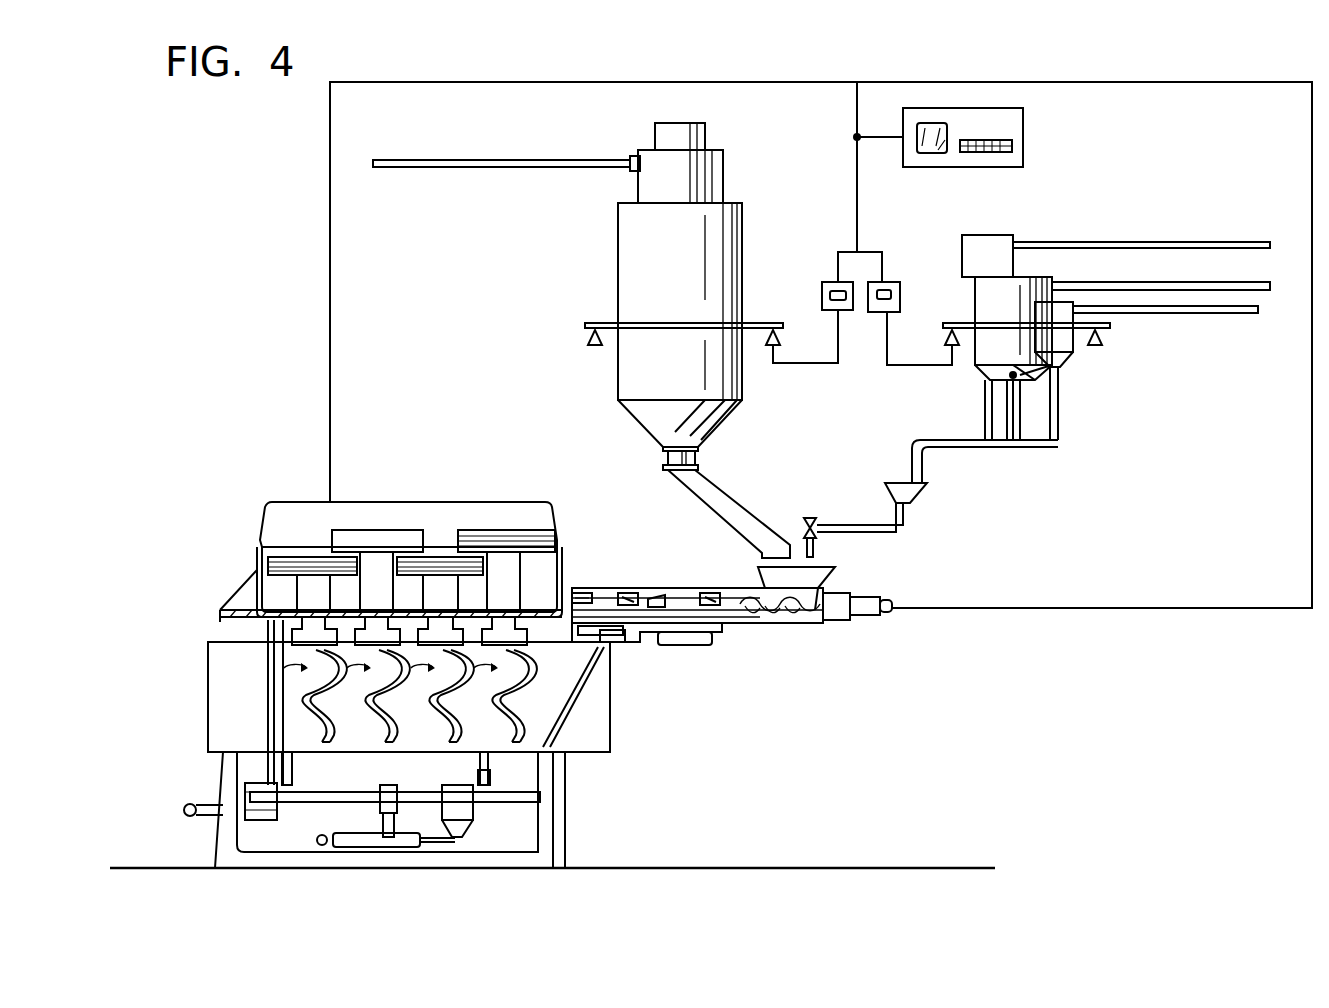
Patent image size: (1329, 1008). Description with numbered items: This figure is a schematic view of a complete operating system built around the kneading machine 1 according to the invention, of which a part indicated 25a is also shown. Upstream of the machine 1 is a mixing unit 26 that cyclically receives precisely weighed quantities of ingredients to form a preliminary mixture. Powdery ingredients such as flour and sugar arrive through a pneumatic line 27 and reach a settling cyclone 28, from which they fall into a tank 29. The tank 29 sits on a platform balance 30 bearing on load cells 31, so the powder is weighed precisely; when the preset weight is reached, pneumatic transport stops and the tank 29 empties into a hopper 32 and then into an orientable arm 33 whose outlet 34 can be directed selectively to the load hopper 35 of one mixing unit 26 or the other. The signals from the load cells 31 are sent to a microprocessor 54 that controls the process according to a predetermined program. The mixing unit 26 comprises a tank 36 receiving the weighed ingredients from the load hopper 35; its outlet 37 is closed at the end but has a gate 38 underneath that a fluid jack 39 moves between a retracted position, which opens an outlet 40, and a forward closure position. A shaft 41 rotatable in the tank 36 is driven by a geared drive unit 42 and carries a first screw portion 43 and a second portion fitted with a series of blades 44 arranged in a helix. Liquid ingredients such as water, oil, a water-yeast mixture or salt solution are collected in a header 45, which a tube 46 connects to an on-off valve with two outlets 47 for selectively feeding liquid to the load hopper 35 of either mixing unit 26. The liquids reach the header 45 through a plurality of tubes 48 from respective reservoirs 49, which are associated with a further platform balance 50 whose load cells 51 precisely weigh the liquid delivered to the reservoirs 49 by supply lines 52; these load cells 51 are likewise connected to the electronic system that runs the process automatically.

The processing machine 1 is at (276, 493).
The drive shaft 25a is at (204, 804).
The mixing unit 26 is at (708, 578).
The pneumatic line 27 is at (398, 160).
The settling cyclone 28 is at (655, 170).
The tank 29 is at (635, 238).
The platform balance 30 is at (655, 324).
The load cells 31 is at (592, 343).
The hopper 32 is at (732, 416).
The orientable arm 33 is at (672, 481).
The outlet 34 is at (778, 546).
The load hopper 35 is at (825, 576).
The tank 36 is at (760, 623).
The outlet 37 is at (585, 596).
The gate 38 is at (625, 637).
The fluid jack 39 is at (700, 643).
The outlet 40 is at (577, 626).
The shaft 41 is at (640, 601).
The geared drive unit 42 is at (875, 607).
The first screw portion 43 is at (800, 622).
The blades 44 is at (662, 604).
The header 45 is at (930, 489).
The tube 46 is at (885, 520).
The on-off valve with two outlets 47 is at (813, 540).
The tubes 48 is at (990, 428).
The reservoirs 49 is at (990, 262).
The platform balance 50 is at (1100, 333).
The load cells 51 is at (1097, 341).
The supply lines 52 is at (1210, 243).
The microprocessor 54 is at (920, 162).